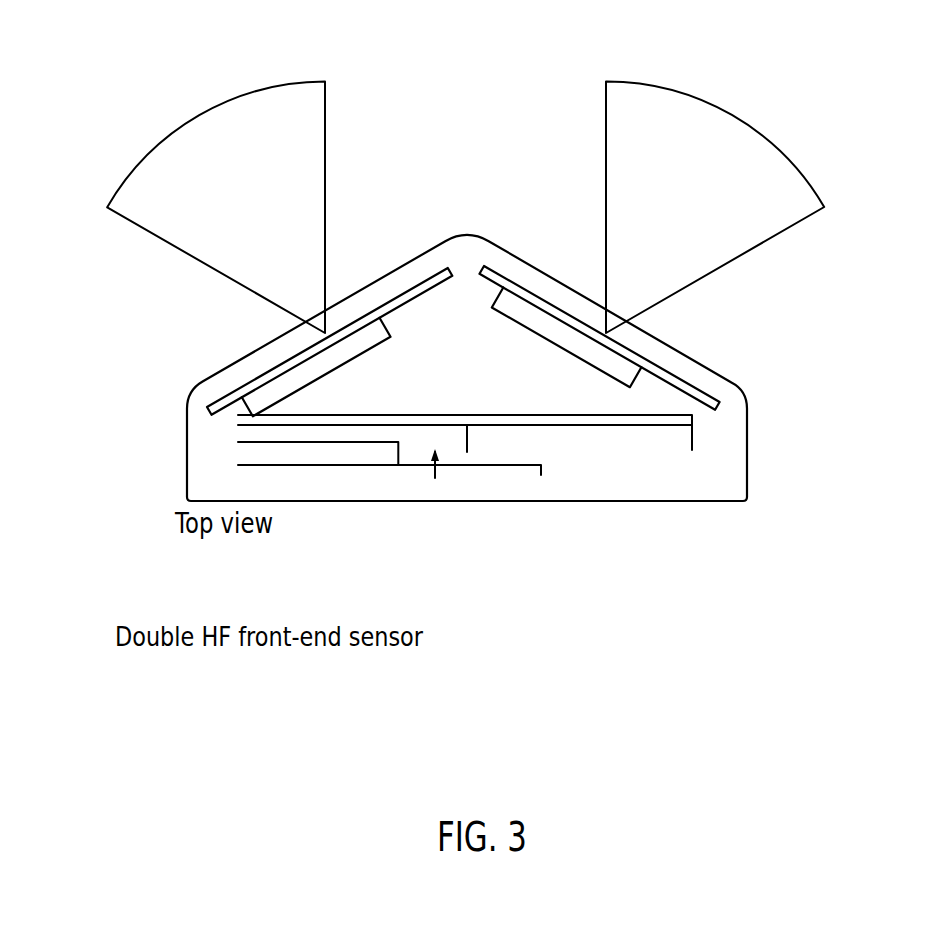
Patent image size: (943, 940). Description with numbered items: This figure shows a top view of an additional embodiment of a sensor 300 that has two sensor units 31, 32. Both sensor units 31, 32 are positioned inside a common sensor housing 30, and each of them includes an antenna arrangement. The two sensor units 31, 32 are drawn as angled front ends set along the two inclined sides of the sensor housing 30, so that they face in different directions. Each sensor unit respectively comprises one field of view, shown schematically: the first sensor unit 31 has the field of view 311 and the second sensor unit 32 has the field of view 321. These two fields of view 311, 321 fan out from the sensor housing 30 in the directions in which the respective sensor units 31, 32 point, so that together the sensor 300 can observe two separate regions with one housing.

The sensor 300 is at (103, 78).
The sensor housing 30 is at (629, 528).
The sensor unit 31 is at (333, 366).
The sensor unit 32 is at (578, 357).
The field of view 311 is at (348, 104).
The field of view 321 is at (758, 105).